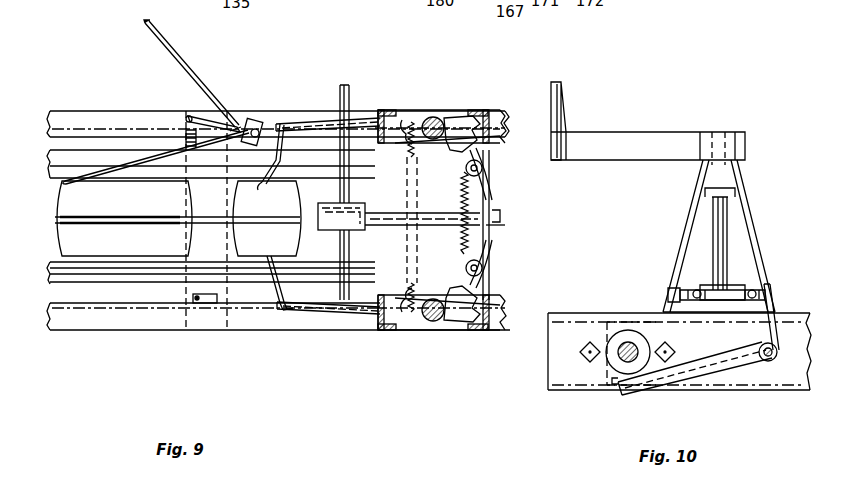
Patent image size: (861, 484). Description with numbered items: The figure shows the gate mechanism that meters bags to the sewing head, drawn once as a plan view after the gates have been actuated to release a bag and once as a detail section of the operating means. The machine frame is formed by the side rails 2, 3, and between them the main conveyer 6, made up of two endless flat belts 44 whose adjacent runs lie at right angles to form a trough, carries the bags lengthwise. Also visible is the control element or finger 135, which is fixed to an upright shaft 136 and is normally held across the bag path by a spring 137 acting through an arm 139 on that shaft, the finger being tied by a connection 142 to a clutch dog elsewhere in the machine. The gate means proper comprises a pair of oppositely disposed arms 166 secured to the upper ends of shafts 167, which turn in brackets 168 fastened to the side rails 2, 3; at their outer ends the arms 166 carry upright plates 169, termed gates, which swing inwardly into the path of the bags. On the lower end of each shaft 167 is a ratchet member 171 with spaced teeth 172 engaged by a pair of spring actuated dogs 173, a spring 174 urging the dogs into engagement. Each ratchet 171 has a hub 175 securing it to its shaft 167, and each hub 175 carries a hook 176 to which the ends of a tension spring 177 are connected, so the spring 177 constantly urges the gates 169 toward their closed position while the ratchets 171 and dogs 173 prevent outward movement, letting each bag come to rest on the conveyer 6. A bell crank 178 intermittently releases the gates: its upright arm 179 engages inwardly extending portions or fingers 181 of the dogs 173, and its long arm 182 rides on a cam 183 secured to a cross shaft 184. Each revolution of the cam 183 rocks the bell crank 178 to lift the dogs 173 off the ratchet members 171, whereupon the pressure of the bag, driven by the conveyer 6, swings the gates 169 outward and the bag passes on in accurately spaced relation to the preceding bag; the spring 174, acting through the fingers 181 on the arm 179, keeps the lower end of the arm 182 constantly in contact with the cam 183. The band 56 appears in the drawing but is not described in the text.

In FIG. 9, the side rail 2 is at (90, 320).
In FIG. 9, the side rail 3 is at (74, 111).
In FIG. 10, the side rail 3 is at (572, 375).
In FIG. 9, the main conveyer 6 is at (206, 243).
In FIG. 9, the endless flat belts 44 is at (205, 240).
In FIG. 9, the guide band 56 is at (67, 158).
In FIG. 9, the control element or finger 135 is at (112, 170).
In FIG. 9, the upright shaft 136 is at (260, 120).
In FIG. 9, the spring 137 is at (182, 143).
In FIG. 9, the arm 139 is at (215, 117).
In FIG. 9, the connection 142 is at (165, 46).
In FIG. 9, the arms 166 is at (285, 122).
In FIG. 10, the arms 166 is at (650, 130).
In FIG. 9, the shafts 167 is at (434, 117).
In FIG. 10, the shafts 167 is at (724, 228).
In FIG. 9, the brackets 168 is at (478, 118).
In FIG. 10, the brackets 168 is at (682, 234).
In FIG. 9, the upright plates or gates 169 is at (268, 184).
In FIG. 10, the upright plates or gates 169 is at (560, 98).
In FIG. 9, the ratchet member 171 is at (460, 117).
In FIG. 10, the ratchet member 171 is at (770, 290).
In FIG. 9, the teeth 172 is at (486, 125).
In FIG. 9, the spring actuated dogs 173 is at (488, 164).
In FIG. 9, the spring 174 is at (462, 250).
In FIG. 9, the hubs 175 is at (428, 120).
In FIG. 10, the hubs 175 is at (740, 290).
In FIG. 9, the hook 176 is at (405, 135).
In FIG. 10, the hook 176 is at (698, 288).
In FIG. 9, the tension spring 177 is at (405, 160).
In FIG. 10, the tension spring 177 is at (694, 285).
In FIG. 9, the bell crank 178 is at (505, 212).
In FIG. 10, the bell crank 178 is at (760, 368).
In FIG. 9, the upright arm 179 is at (505, 226).
In FIG. 10, the upright arm 179 is at (764, 328).
In FIG. 9, the inwardly extending portions or fingers 181 is at (482, 184).
In FIG. 10, the inwardly extending portions or fingers 181 is at (760, 285).
In FIG. 9, the long arm 182 is at (431, 212).
In FIG. 10, the long arm 182 is at (690, 373).
In FIG. 9, the cam 183 is at (355, 226).
In FIG. 10, the cam 183 is at (620, 388).
In FIG. 9, the cross shaft 184 is at (346, 88).
In FIG. 10, the cross shaft 184 is at (626, 342).